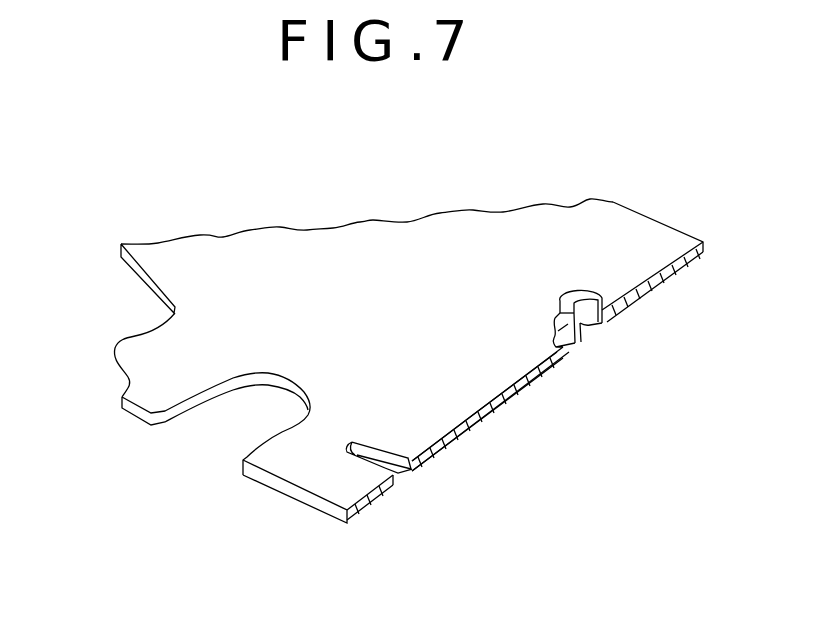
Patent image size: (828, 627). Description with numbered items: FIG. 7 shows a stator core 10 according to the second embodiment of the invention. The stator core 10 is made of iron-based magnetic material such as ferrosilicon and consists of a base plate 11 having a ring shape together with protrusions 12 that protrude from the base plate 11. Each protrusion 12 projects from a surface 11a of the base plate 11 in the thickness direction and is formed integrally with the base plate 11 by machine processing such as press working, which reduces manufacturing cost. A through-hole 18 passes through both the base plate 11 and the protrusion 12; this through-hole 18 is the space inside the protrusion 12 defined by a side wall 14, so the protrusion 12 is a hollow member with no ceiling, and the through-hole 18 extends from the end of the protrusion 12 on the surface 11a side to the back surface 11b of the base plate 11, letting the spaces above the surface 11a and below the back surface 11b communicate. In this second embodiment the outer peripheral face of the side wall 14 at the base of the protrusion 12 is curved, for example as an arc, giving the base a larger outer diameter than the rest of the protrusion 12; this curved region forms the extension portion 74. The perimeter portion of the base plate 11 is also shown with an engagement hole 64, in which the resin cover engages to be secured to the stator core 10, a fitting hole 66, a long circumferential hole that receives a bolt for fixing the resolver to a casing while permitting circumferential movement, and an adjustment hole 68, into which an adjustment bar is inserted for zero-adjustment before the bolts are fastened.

The stator core 10 is at (662, 188).
The base plate 11 is at (513, 370).
The surface of the base plate 11a is at (533, 370).
The back surface of the base plate 11b is at (450, 442).
The protrusion 12 is at (590, 288).
The side wall 14 is at (618, 317).
The through-hole 18 is at (585, 327).
The engagement hole 64 is at (395, 470).
The fitting hole 66 is at (150, 312).
The adjustment hole 68 is at (233, 432).
The extension portion 74 is at (561, 354).